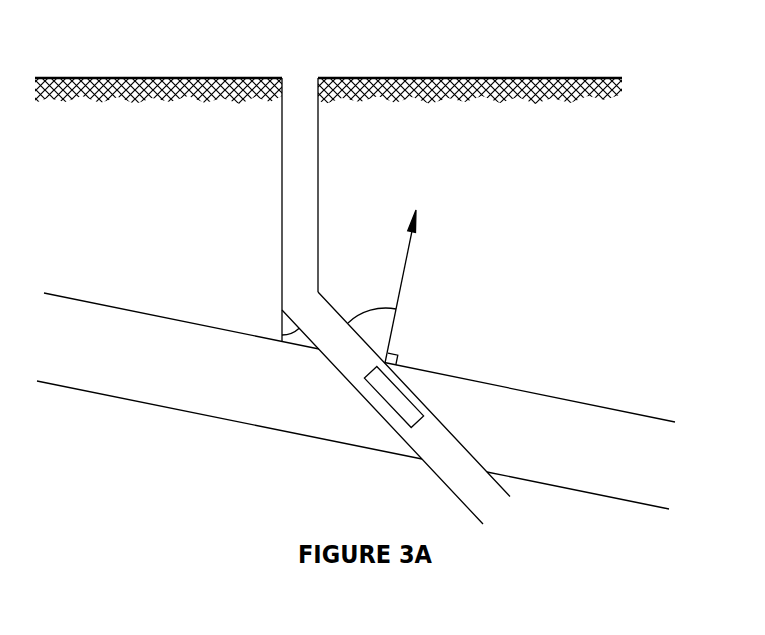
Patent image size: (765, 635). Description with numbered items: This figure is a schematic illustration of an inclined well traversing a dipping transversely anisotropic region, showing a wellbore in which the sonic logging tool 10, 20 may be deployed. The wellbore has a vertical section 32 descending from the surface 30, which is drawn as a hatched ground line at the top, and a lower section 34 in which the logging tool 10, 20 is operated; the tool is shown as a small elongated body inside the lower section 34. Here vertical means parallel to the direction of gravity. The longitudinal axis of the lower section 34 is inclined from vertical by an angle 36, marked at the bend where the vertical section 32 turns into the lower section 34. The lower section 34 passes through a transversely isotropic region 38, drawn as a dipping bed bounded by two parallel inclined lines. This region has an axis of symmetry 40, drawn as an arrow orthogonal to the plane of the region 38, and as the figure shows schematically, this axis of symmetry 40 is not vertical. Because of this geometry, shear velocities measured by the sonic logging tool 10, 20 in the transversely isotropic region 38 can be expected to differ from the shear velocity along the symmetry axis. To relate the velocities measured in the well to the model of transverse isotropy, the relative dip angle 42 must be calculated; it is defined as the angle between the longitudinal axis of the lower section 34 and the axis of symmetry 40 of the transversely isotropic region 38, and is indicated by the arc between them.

The logging tool 10 is at (361, 430).
The logging tool 20 is at (390, 405).
The surface 30 is at (455, 78).
The vertical section 32 is at (319, 170).
The lower section 34 is at (452, 491).
The angle from vertical 36 is at (281, 325).
The transversely isotropic region 38 is at (240, 393).
The axis of symmetry 40 is at (406, 263).
The relative dip angle 42 is at (377, 335).